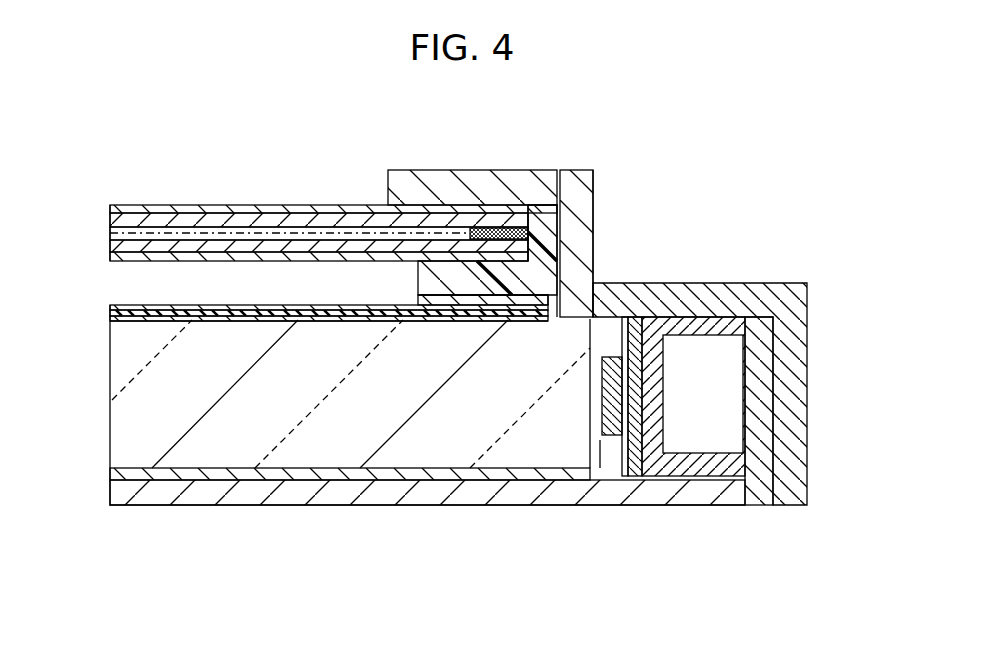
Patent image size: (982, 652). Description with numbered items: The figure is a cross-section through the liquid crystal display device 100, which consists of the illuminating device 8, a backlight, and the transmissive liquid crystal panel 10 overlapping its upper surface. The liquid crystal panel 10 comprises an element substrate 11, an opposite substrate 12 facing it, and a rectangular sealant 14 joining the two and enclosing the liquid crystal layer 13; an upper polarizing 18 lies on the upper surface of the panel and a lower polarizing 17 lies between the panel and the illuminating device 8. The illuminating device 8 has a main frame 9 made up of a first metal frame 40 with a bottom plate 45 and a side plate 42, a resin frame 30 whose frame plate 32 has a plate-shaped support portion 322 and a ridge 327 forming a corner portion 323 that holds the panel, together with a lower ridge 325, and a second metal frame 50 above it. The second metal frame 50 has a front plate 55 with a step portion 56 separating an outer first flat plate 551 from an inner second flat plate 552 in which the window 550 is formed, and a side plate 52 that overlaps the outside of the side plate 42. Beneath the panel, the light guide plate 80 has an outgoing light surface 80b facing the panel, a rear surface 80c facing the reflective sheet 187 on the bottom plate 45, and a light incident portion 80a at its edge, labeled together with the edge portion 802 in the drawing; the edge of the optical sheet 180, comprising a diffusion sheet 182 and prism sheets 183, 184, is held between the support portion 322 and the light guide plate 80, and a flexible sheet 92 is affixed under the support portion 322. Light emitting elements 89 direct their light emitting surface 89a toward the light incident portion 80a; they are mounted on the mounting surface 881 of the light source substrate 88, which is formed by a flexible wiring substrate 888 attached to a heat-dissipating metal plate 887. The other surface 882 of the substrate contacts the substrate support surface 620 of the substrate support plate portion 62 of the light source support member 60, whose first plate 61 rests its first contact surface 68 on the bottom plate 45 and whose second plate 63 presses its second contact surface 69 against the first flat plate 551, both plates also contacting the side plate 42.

The liquid crystal display device 100 is at (578, 74).
The liquid crystal panel 10 is at (303, 151).
The element substrate 11 is at (288, 245).
The opposite substrate 12 is at (320, 220).
The liquid crystal layer 13 is at (352, 207).
The sealant 14 is at (485, 229).
The lower polarizing 17 is at (112, 257).
The upper polarizing 18 is at (112, 207).
The optical sheet 180 is at (329, 207).
The diffusion sheet 182 is at (245, 319).
The prism sheet 183 is at (210, 313).
The prism sheet 184 is at (178, 307).
The outgoing light surface 80b is at (263, 306).
The second metal frame 50 is at (533, 205).
The main frame 9 is at (533, 205).
The window 550 is at (460, 206).
The second flat plate 552 is at (452, 181).
The step portion 56 is at (571, 181).
The plate-shaped support portion 322 is at (418, 272).
The flexible sheet 92 is at (507, 234).
The corner portion 323 is at (526, 262).
The ridge 327 is at (565, 227).
The lower ridge 325 is at (565, 247).
The resin frame 30 is at (643, 233).
The frame plate 32 is at (562, 268).
The first flat plate 551 is at (728, 362).
The side plate 52 is at (795, 368).
The side plate 42 is at (757, 450).
The front plate 55 is at (614, 288).
The second plate 63 is at (750, 316).
The second contact surface 69 is at (730, 316).
The other surface 882 is at (693, 316).
The mounting surface 881 is at (663, 316).
The illuminating device 8 is at (412, 470).
The light guide plate 80 is at (427, 471).
The rear surface 80c is at (231, 481).
The bottom plate 45 is at (345, 490).
The reflective sheet 187 is at (160, 475).
The first metal frame 40 is at (200, 510).
The end portion of frame 802 is at (550, 529).
The light incident portion 80a is at (598, 445).
The light emitting element 89 is at (608, 407).
The light emitting surface 89a is at (597, 378).
The light source substrate 88 is at (610, 462).
The flexible wiring substrate 888 is at (625, 430).
The metal plate 887 is at (635, 466).
The light source support member 60 is at (692, 457).
The substrate support plate portion 62 is at (657, 413).
The substrate support surface 620 is at (633, 380).
The first plate 61 is at (678, 468).
The first contact surface 68 is at (737, 478).